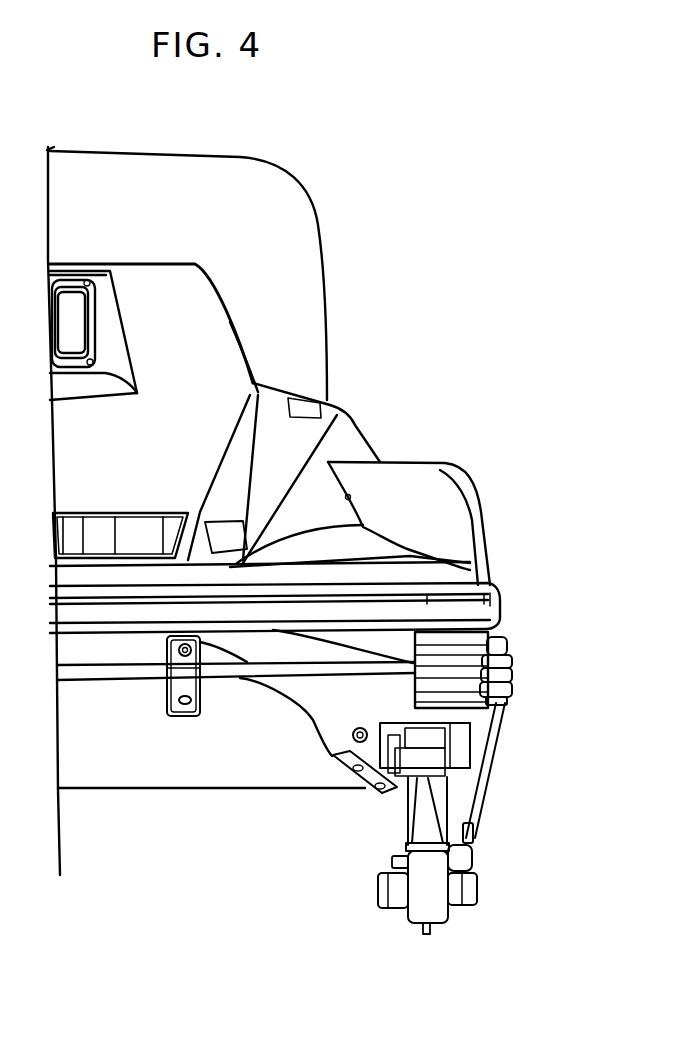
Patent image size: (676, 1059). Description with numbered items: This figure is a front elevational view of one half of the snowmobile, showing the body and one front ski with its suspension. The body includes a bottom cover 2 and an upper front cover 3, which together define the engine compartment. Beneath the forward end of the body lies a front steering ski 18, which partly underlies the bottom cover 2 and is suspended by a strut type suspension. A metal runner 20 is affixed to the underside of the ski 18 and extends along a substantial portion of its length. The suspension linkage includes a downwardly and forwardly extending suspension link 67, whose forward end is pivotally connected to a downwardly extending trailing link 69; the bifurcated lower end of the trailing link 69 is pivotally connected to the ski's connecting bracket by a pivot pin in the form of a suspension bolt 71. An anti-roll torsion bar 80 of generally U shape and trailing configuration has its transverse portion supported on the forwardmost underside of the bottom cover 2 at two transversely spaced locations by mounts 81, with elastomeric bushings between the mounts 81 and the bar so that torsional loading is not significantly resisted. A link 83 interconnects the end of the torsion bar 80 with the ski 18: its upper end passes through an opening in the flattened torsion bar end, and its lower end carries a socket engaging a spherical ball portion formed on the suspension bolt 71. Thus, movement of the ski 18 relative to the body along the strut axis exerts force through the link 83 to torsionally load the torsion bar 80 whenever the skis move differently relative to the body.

The bottom cover 2 is at (170, 780).
The upper front cover 3 is at (213, 376).
The front steering ski 18 is at (464, 907).
The metal runner 20 is at (421, 936).
The suspension link 67 is at (368, 768).
The trailing link 69 is at (405, 822).
The suspension bolt 71 is at (393, 863).
The anti-roll torsion bar 80 is at (117, 670).
The mount 81 is at (203, 697).
The link 83 is at (475, 763).